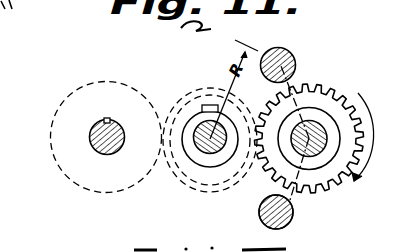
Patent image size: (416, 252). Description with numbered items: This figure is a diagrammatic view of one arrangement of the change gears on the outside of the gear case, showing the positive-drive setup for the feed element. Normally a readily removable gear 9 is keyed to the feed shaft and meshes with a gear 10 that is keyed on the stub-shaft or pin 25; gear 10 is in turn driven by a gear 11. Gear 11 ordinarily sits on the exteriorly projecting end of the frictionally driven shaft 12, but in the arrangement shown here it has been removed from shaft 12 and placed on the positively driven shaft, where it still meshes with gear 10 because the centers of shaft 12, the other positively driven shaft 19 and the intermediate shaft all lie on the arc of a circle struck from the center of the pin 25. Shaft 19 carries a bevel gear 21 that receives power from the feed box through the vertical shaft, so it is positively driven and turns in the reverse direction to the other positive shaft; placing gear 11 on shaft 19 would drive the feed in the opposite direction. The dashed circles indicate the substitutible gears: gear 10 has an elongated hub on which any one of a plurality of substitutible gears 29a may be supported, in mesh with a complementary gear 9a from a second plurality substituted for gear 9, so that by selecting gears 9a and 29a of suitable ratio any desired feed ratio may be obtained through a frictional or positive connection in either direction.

The substitutible gear 9a is at (105, 92).
The gear 10 is at (193, 93).
The gear 11 is at (309, 138).
The shaft 12 is at (280, 66).
The shaft 19 is at (293, 221).
The bevel gear 21 is at (106, 137).
The stub-shaft or pin 25 is at (210, 139).
The substitutible gear 29a is at (266, 217).
The gear 9 is at (409, 189).